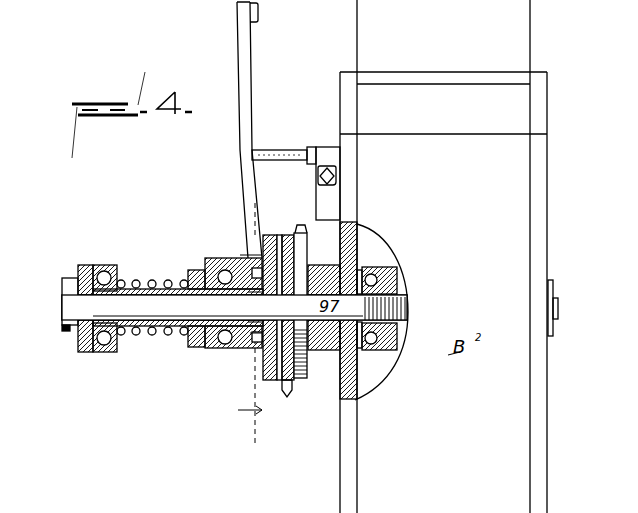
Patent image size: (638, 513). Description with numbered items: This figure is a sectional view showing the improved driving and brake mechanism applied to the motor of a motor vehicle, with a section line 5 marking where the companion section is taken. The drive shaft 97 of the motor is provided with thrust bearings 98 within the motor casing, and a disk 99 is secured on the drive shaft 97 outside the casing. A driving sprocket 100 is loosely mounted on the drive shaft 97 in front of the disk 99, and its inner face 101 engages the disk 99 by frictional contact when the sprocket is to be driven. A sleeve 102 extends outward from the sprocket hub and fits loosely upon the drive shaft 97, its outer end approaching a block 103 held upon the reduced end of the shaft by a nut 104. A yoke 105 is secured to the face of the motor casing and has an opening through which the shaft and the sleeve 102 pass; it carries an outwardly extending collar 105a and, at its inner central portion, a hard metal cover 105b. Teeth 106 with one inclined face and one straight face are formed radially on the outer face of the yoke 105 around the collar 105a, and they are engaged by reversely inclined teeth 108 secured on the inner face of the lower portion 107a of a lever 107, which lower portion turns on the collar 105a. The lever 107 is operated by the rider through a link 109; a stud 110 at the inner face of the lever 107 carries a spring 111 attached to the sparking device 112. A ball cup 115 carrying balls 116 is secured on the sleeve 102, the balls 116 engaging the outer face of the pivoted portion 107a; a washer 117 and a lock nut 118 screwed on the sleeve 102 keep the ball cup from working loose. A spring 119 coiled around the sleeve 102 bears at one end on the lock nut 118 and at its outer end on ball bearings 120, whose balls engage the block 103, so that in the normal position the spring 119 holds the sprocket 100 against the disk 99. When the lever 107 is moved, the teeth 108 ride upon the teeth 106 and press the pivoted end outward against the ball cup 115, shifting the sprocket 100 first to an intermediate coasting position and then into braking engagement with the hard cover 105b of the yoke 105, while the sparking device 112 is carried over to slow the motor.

The section line 5- 5 is at (250, 327).
The drive shaft 97 is at (234, 307).
The thrust bearings 98 is at (373, 279).
The disk 99 is at (334, 310).
The driving sprocket 100 is at (287, 398).
The inner face 101 is at (297, 240).
The sleeve 102 is at (185, 327).
The block 103 is at (85, 353).
The nut 104 is at (70, 318).
The yoke 105 is at (262, 362).
The collar 105a is at (252, 336).
The hard metal cover 105b is at (277, 238).
The teeth 106 is at (252, 290).
The lever 107 is at (251, 113).
The lower portion of lever 107a is at (250, 274).
The teeth 108 is at (252, 257).
The link 109 is at (252, 24).
The stud 110 is at (296, 150).
The spring 111 is at (313, 146).
The sparking device 112 is at (328, 183).
The ball cup 115 is at (212, 264).
The balls 116 is at (222, 349).
The washer 117 is at (195, 270).
The lock nut 118 is at (195, 347).
The spring 119 is at (152, 280).
The ball bearings 120 is at (108, 265).